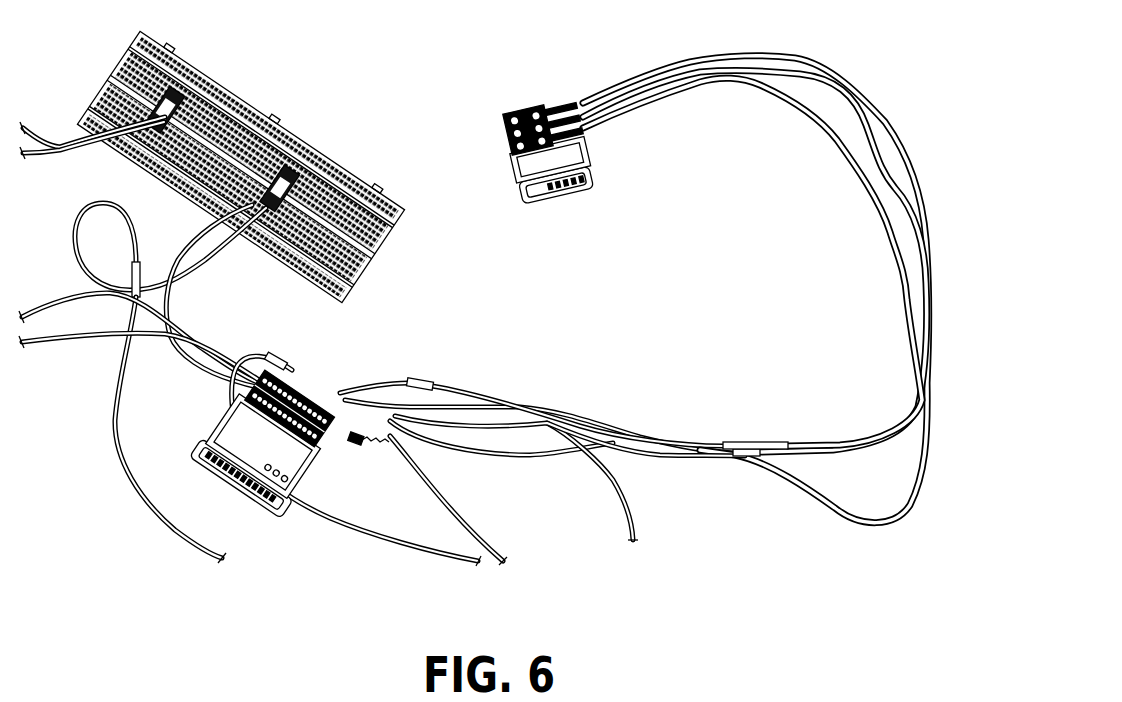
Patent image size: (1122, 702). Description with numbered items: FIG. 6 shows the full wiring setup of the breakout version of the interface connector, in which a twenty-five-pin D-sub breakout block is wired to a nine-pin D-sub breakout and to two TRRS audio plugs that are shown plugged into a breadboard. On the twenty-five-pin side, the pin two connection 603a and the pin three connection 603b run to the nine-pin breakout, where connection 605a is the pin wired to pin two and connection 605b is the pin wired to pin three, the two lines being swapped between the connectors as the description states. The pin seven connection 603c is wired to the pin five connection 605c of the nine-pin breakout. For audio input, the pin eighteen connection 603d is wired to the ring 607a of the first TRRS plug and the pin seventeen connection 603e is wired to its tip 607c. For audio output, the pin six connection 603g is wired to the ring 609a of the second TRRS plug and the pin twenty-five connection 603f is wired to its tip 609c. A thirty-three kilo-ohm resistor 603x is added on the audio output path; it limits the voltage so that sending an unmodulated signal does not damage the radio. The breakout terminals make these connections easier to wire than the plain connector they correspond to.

The tip component of audio input connector 607c is at (80, 132).
The ring component of audio input connector 607a is at (78, 150).
The tip component of audio output connector 609c is at (173, 272).
The ring component of audio output connector 609a is at (198, 269).
The DB9 pin connection 605a is at (607, 94).
The DB9 pin connection 605b is at (668, 78).
The DB9 pin 5 connection 605c is at (698, 80).
The DB25 pin 25 connection 603f is at (291, 370).
The DB25 pin 2 connection 603a is at (345, 405).
The DB25 pin 3 connection 603b is at (380, 398).
The DB25 pin 18 connection 603d is at (218, 378).
The DB25 pin 17 connection 603e is at (233, 402).
The resistor 603x is at (354, 445).
The DB25 pin 7 connection 603c is at (322, 447).
The DB25 pin 6 connection 603g is at (388, 430).